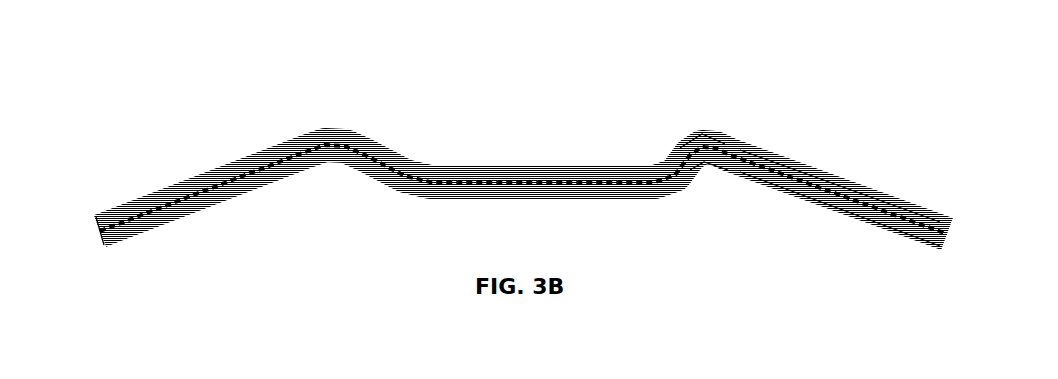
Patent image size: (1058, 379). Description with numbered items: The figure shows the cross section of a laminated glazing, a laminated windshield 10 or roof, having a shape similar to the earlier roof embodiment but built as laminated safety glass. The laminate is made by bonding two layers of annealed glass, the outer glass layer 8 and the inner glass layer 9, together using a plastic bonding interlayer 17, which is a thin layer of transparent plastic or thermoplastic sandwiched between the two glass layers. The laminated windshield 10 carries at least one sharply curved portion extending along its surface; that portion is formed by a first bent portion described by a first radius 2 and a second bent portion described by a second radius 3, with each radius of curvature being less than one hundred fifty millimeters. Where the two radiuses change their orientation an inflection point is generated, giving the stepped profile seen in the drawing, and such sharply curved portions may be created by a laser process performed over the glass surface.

The first radius 2 is at (712, 173).
The second radius 3 is at (707, 122).
The outer glass layer 8 is at (855, 166).
The inner glass layer 9 is at (886, 240).
The laminated windshield 10 is at (514, 160).
The plastic bonding interlayer 17 is at (90, 233).